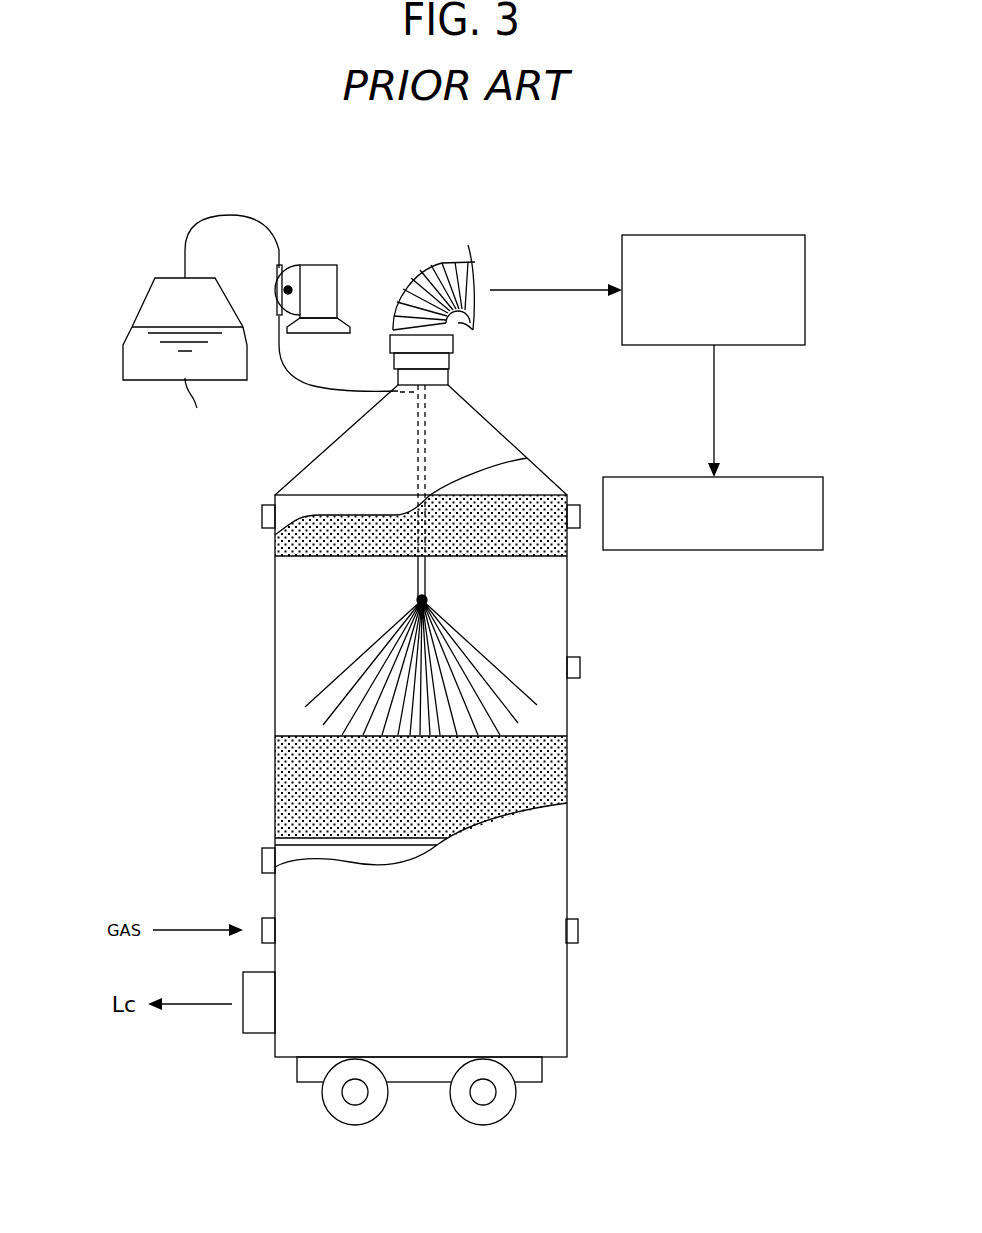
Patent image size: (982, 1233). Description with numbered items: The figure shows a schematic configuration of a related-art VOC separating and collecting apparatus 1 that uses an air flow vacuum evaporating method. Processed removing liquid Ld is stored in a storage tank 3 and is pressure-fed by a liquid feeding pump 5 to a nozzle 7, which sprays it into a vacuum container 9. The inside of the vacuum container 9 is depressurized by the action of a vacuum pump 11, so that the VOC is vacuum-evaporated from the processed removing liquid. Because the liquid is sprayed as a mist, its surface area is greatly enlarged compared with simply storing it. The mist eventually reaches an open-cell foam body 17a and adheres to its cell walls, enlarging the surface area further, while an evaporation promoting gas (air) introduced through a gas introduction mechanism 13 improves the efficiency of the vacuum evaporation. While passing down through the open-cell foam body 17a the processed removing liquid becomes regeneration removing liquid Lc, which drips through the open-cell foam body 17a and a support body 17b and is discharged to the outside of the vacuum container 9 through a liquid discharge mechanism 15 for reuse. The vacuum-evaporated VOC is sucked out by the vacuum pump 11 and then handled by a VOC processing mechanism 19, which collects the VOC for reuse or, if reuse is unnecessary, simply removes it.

The VOC separating and collecting apparatus 1 is at (523, 203).
The storage tank 3 is at (112, 393).
The liquid feeding pump 5 is at (319, 276).
The nozzle 7 is at (458, 598).
The vacuum container 9 is at (275, 637).
The vacuum pump 11 is at (728, 235).
The gas introduction mechanism 13 is at (578, 932).
The liquid discharge mechanism 15 is at (260, 1020).
The open-cell foam body 17a is at (290, 763).
The support body 17b is at (275, 845).
The VOC processing mechanism 19 is at (788, 477).